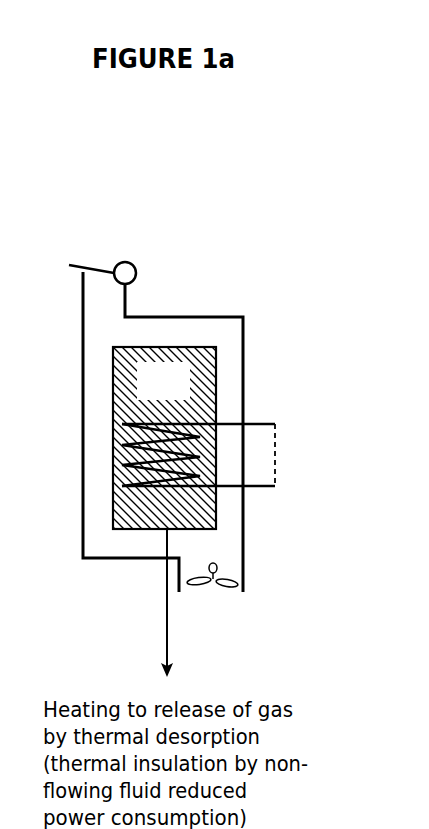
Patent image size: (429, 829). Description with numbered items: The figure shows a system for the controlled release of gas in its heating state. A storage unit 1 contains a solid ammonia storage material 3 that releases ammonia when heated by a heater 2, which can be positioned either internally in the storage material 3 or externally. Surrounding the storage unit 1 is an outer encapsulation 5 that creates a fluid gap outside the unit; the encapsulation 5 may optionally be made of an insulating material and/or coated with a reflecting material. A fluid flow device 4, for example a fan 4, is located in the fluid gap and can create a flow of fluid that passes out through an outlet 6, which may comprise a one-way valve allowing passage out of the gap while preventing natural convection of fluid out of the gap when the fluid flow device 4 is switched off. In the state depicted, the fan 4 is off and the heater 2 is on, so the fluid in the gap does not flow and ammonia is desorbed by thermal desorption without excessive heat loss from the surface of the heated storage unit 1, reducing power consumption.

The storage unit 1 is at (218, 357).
The heater 2 is at (279, 481).
The solid ammonia storage material 3 is at (163, 381).
The fluid flow device 4 is at (222, 563).
The outer encapsulation 5 is at (246, 317).
The outlet 6 is at (122, 253).